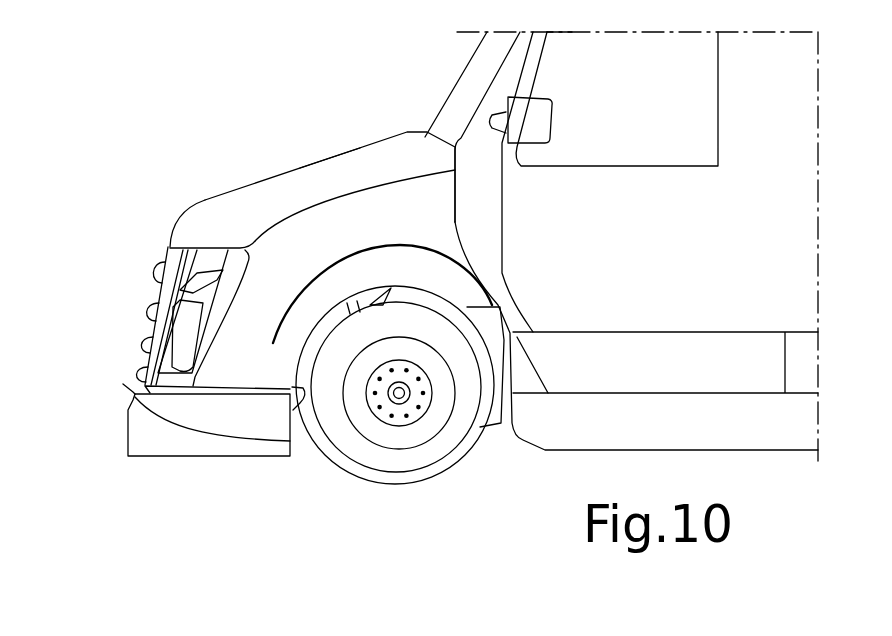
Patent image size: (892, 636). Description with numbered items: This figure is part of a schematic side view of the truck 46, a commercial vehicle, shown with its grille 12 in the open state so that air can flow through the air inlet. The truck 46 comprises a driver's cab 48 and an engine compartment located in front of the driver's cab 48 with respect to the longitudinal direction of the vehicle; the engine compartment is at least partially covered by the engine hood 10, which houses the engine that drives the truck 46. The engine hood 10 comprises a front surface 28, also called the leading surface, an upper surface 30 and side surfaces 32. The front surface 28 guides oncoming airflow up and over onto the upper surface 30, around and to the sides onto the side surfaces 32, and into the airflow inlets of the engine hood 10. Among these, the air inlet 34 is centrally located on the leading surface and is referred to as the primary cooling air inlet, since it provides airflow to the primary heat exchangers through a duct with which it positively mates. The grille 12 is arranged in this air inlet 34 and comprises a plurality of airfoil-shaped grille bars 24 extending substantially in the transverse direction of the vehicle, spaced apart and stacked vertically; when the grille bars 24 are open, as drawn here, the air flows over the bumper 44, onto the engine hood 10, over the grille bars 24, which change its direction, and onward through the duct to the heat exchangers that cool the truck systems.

The engine hood 10 is at (262, 184).
The grille 12 is at (162, 258).
The grille bars 24 is at (157, 278).
The front surface 28 is at (175, 212).
The upper surface 30 is at (338, 152).
The side surfaces 32 is at (410, 212).
The air inlet 34 is at (123, 390).
The bumper 44 is at (152, 447).
The truck 46 is at (452, 53).
The driver's cab 48 is at (432, 120).